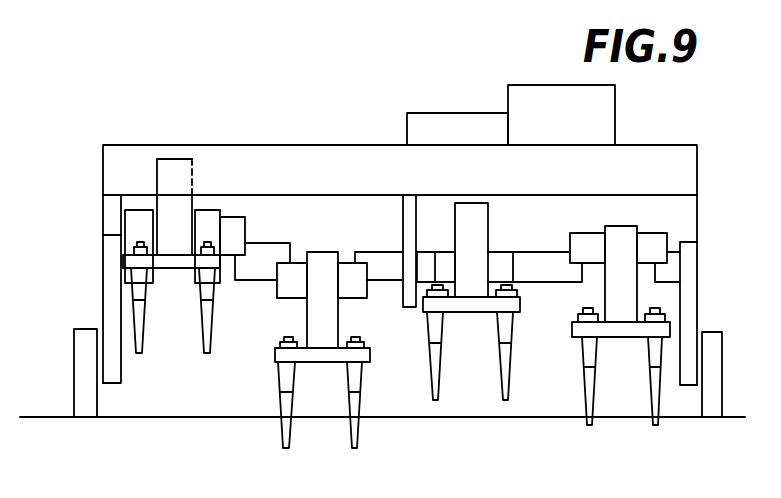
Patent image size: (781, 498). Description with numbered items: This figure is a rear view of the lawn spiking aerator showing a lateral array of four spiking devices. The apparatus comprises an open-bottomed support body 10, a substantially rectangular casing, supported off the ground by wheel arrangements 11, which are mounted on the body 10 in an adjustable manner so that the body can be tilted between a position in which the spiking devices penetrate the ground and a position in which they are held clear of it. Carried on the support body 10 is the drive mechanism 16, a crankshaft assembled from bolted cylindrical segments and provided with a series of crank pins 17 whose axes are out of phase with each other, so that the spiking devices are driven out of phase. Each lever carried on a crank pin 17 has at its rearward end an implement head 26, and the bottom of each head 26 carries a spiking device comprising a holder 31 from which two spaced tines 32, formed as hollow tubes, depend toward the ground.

The support body 10 is at (697, 223).
The wheel arrangements 11 is at (74, 385).
The drive mechanism 16 is at (272, 243).
The crank pin 17 is at (230, 218).
The implement head 26 is at (168, 207).
The holder 31 is at (133, 262).
The tines 32 is at (205, 345).